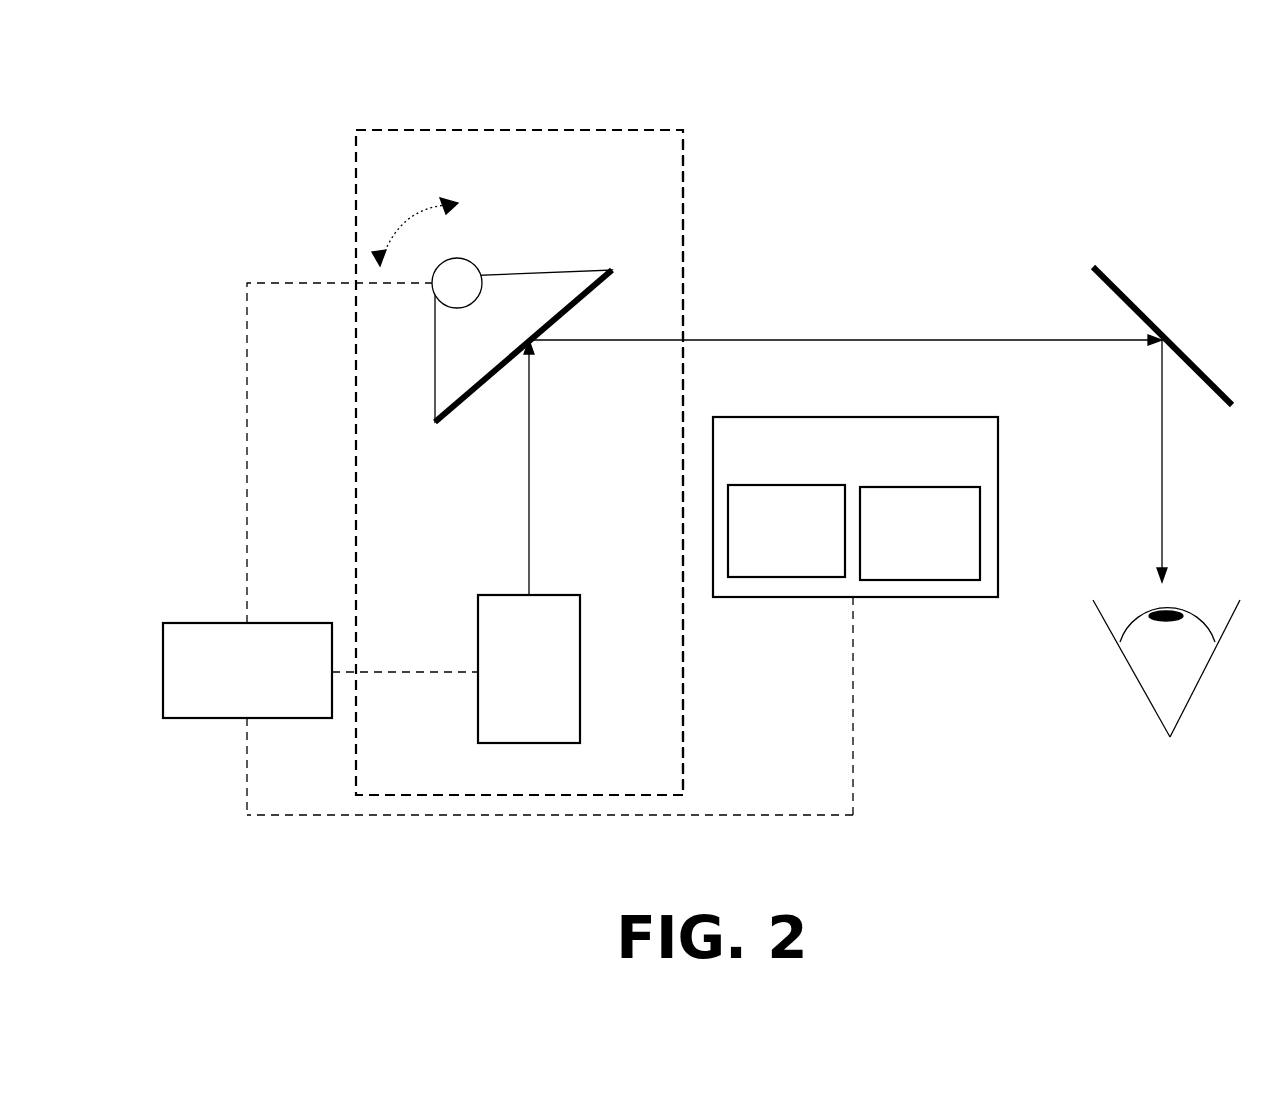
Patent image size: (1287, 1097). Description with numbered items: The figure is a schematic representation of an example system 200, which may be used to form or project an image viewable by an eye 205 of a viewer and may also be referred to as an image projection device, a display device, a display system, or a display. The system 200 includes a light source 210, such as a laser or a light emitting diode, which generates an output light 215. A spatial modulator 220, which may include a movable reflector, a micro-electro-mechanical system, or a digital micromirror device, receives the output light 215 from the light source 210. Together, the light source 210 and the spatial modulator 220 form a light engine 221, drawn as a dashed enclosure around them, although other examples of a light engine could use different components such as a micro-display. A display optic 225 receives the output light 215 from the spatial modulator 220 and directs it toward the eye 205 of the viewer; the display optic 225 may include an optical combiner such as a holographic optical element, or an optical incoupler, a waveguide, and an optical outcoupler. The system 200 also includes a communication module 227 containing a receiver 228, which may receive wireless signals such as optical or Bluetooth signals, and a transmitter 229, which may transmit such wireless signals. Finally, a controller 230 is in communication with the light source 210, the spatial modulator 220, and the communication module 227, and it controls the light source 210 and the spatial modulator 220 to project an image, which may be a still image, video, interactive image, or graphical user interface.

The system 200 is at (324, 106).
The eye 205 is at (1128, 672).
The light source 210 is at (506, 684).
The output light 215 is at (530, 500).
The spatial modulator 220 is at (543, 268).
The light engine 221 is at (684, 172).
The display optic 225 is at (1125, 294).
The communication module 227 is at (835, 459).
The receiver 228 is at (765, 544).
The transmitter 229 is at (898, 544).
The controller 230 is at (225, 682).